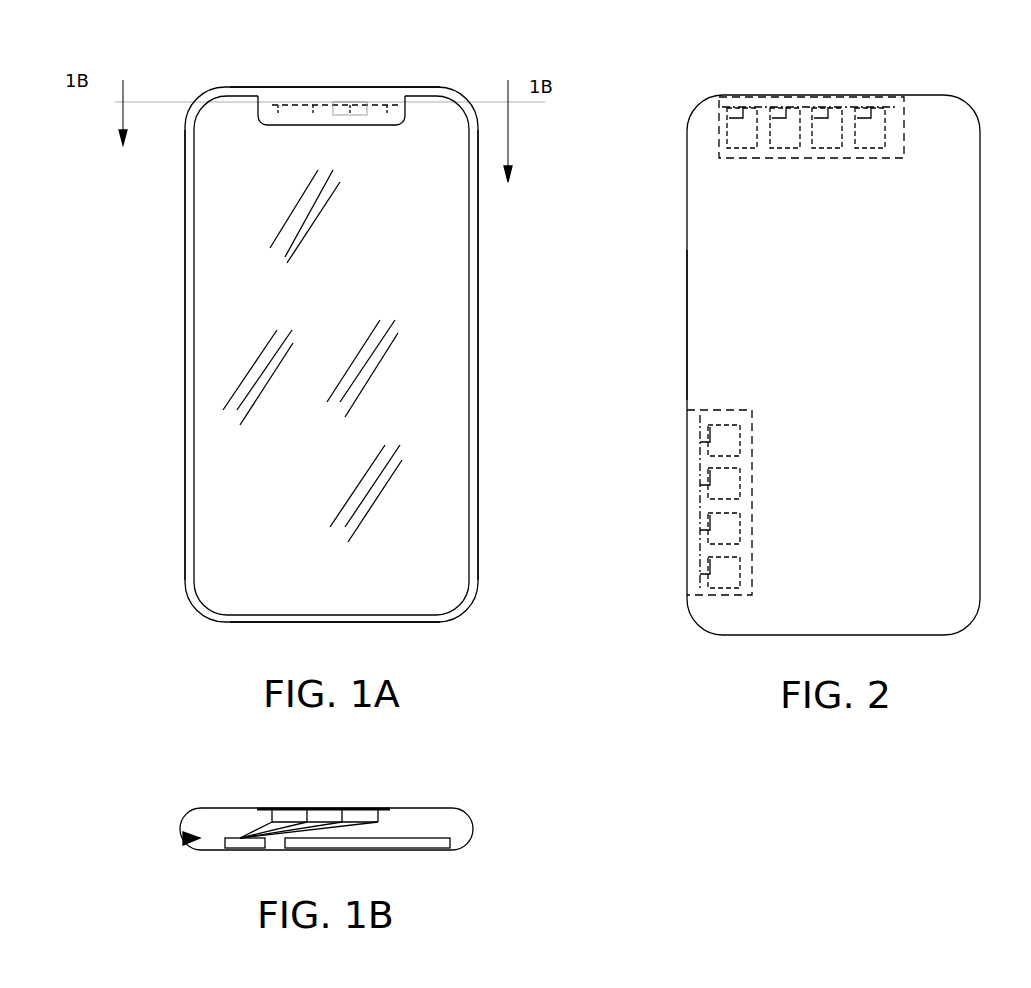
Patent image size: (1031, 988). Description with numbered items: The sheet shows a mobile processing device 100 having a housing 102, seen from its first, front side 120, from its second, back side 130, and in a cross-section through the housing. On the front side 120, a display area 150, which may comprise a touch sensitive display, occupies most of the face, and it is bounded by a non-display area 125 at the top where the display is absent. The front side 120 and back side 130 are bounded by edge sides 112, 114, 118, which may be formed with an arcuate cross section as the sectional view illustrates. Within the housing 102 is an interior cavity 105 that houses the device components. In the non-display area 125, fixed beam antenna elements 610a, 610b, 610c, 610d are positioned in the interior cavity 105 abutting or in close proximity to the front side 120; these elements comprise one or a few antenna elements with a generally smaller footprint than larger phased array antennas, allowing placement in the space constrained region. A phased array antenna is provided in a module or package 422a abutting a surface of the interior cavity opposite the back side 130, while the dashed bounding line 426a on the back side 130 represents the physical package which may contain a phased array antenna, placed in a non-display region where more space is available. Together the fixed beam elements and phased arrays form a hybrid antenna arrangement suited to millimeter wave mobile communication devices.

In FIG. 1A, the mobile processing device 100 is at (187, 228).
In FIG. 2, the mobile processing device 100 is at (687, 233).
In FIG. 1A, the housing 102 is at (187, 455).
In FIG. 1B, the housing 102 is at (185, 812).
In FIG. 1B, the interior cavity 105 is at (185, 840).
In FIG. 1A, the edge side 112 is at (187, 288).
In FIG. 1A, the edge side 114 is at (478, 280).
In FIG. 1A, the edge side 118 is at (395, 622).
In FIG. 1A, the first, front side 120 is at (197, 95).
In FIG. 1A, the non-display area 125 is at (442, 92).
In FIG. 2, the second, back side 130 is at (688, 333).
In FIG. 1A, the display area 150 is at (210, 342).
In FIG. 1B, the package 422a is at (245, 851).
In FIG. 2, the bounding line 426a is at (910, 105).
In FIG. 1B, the bounding line 426a is at (425, 850).
In FIG. 1A, the antenna element 610a is at (263, 103).
In FIG. 1B, the antenna element 610a is at (262, 807).
In FIG. 1A, the antenna element 610b is at (300, 103).
In FIG. 1B, the antenna element 610b is at (302, 807).
In FIG. 1A, the antenna element 610c is at (331, 102).
In FIG. 1B, the antenna element 610c is at (340, 807).
In FIG. 1A, the antenna element 610d is at (385, 105).
In FIG. 1B, the antenna element 610d is at (385, 807).